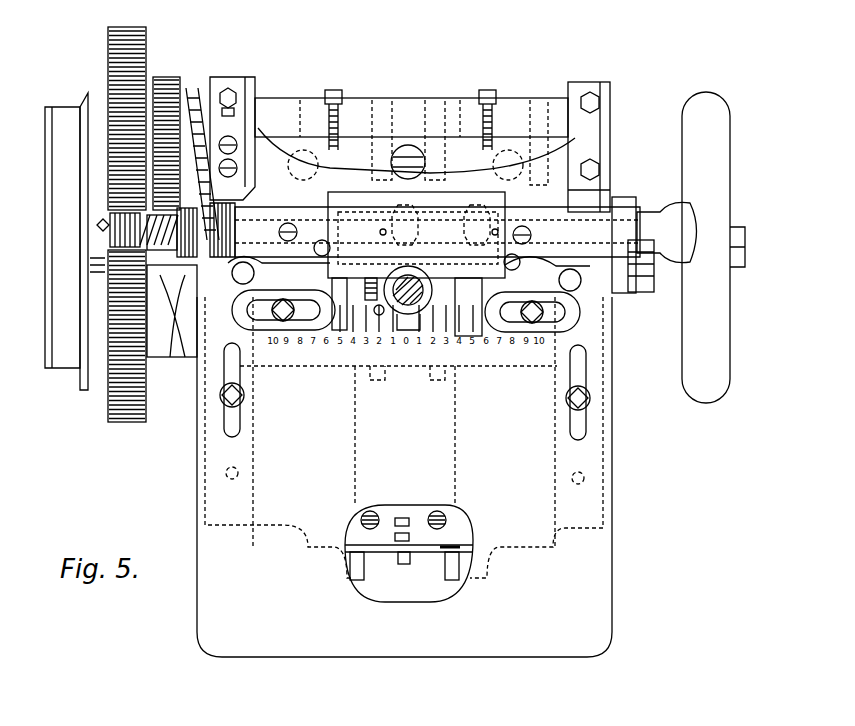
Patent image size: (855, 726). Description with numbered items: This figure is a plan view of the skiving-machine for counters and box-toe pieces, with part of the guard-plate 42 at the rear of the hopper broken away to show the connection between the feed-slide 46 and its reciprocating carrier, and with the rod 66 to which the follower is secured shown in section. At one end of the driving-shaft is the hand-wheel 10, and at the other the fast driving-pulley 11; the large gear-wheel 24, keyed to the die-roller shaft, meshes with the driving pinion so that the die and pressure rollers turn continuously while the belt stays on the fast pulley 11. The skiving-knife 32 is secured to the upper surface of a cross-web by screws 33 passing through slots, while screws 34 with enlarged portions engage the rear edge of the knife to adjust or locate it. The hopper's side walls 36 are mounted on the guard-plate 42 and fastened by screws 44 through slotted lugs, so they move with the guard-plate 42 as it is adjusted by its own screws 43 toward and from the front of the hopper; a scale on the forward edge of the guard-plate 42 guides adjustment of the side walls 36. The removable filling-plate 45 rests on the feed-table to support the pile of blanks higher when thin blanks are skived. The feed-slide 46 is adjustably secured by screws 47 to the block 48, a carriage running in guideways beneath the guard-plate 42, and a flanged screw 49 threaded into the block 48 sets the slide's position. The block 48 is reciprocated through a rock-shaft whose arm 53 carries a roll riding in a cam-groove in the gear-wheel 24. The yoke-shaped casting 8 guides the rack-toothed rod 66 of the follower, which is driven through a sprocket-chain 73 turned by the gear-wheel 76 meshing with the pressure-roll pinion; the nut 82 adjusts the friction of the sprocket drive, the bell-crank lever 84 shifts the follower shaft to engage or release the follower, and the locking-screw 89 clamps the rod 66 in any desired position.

The yoke-shaped casting 8 is at (258, 128).
The hand-wheel 10 is at (722, 178).
The fast driving-pulley 11 is at (58, 115).
The large gear-wheel 24 is at (140, 40).
The skiving-knife 32 is at (353, 140).
The screws 33 is at (411, 154).
The screws 34 is at (334, 98).
The side walls 36 is at (292, 257).
The guard-plate 42 is at (292, 648).
The screws 43 is at (242, 402).
The screws 44 is at (278, 316).
The filling-plate 45 is at (540, 368).
The feed-slide 46 is at (387, 538).
The screws 47 is at (372, 513).
The block 48 is at (450, 548).
The screw 49 is at (405, 563).
The arm 53 is at (181, 350).
The rod 66 is at (407, 305).
The sprocket-chain 73 is at (193, 95).
The gear-wheel 76 is at (167, 80).
The nut 82 is at (117, 235).
The bell-crank lever 84 is at (628, 292).
The locking-screw 89 is at (372, 302).